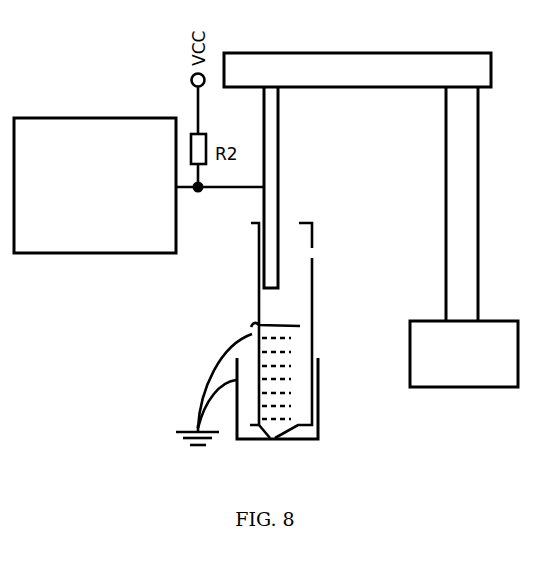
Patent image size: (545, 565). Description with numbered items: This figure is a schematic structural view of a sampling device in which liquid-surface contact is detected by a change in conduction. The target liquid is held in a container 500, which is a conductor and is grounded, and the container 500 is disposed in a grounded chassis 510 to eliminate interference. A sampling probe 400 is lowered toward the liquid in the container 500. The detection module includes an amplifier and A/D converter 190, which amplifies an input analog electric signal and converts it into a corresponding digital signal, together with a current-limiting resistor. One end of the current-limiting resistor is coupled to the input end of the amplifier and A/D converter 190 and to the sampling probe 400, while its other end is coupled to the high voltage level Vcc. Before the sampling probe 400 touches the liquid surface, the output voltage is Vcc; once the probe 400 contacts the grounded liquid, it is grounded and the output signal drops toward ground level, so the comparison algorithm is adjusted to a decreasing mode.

The amplifier and A/D converter 190 is at (95, 185).
The sampling probe 400 is at (262, 209).
The container 500 is at (298, 254).
The grounded chassis 510 is at (320, 408).